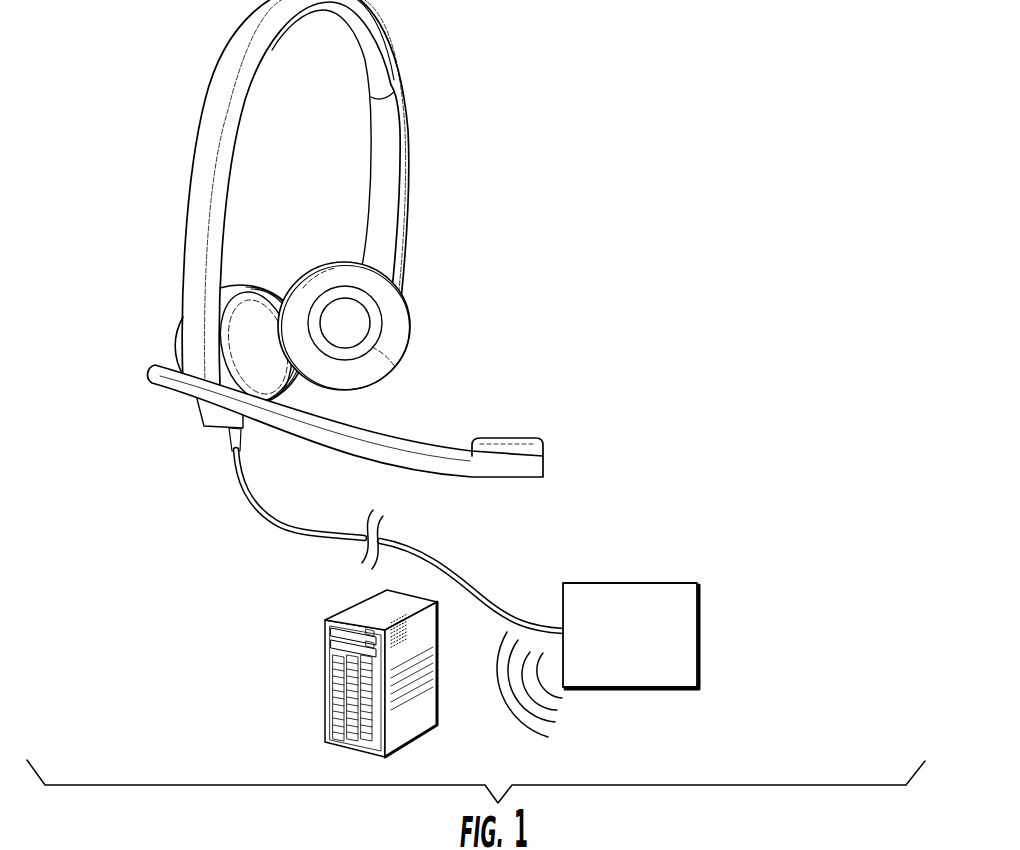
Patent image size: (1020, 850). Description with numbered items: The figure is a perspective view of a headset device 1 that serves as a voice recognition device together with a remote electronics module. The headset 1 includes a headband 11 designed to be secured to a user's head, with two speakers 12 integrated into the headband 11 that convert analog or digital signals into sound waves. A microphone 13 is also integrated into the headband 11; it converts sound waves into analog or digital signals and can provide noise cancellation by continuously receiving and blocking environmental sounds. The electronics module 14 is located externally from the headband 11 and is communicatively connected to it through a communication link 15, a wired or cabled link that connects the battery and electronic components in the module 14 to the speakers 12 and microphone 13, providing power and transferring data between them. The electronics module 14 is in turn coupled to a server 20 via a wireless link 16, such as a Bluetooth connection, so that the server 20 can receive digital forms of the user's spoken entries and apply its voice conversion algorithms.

The headset device 1 is at (616, 177).
The headband 11 is at (240, 33).
The speaker 12 is at (270, 303).
The microphone 13 is at (515, 447).
The electronics module 14 is at (698, 617).
The communication link 15 is at (252, 500).
The wireless link 16 is at (508, 738).
The server 20 is at (325, 683).